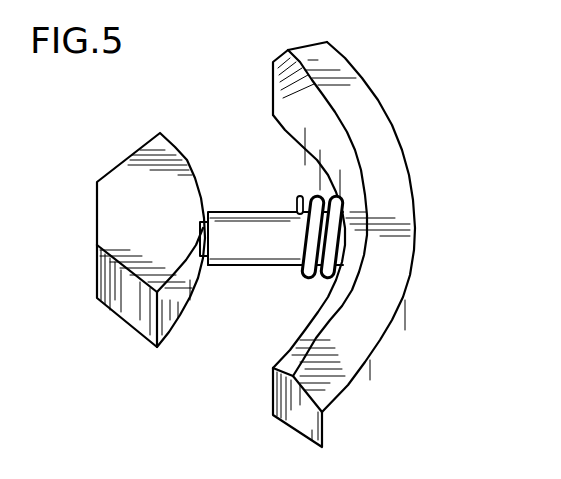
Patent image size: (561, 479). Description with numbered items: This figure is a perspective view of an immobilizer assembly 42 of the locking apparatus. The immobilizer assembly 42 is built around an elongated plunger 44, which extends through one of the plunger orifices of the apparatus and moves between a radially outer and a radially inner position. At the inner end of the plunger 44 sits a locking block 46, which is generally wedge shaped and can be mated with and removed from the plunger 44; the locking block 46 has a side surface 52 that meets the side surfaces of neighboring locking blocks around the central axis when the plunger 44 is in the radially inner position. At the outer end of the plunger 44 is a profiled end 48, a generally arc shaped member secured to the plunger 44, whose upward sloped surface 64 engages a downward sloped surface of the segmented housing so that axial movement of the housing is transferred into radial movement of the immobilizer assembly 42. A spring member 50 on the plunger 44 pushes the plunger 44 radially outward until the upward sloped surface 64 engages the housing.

The immobilizer assembly 42 is at (469, 220).
The plunger 44 is at (255, 212).
The locking block 46 is at (117, 182).
The profiled end 48 is at (363, 373).
The spring member 50 is at (307, 270).
The side surfaces 52 is at (132, 315).
The upward sloped surface 64 is at (395, 182).